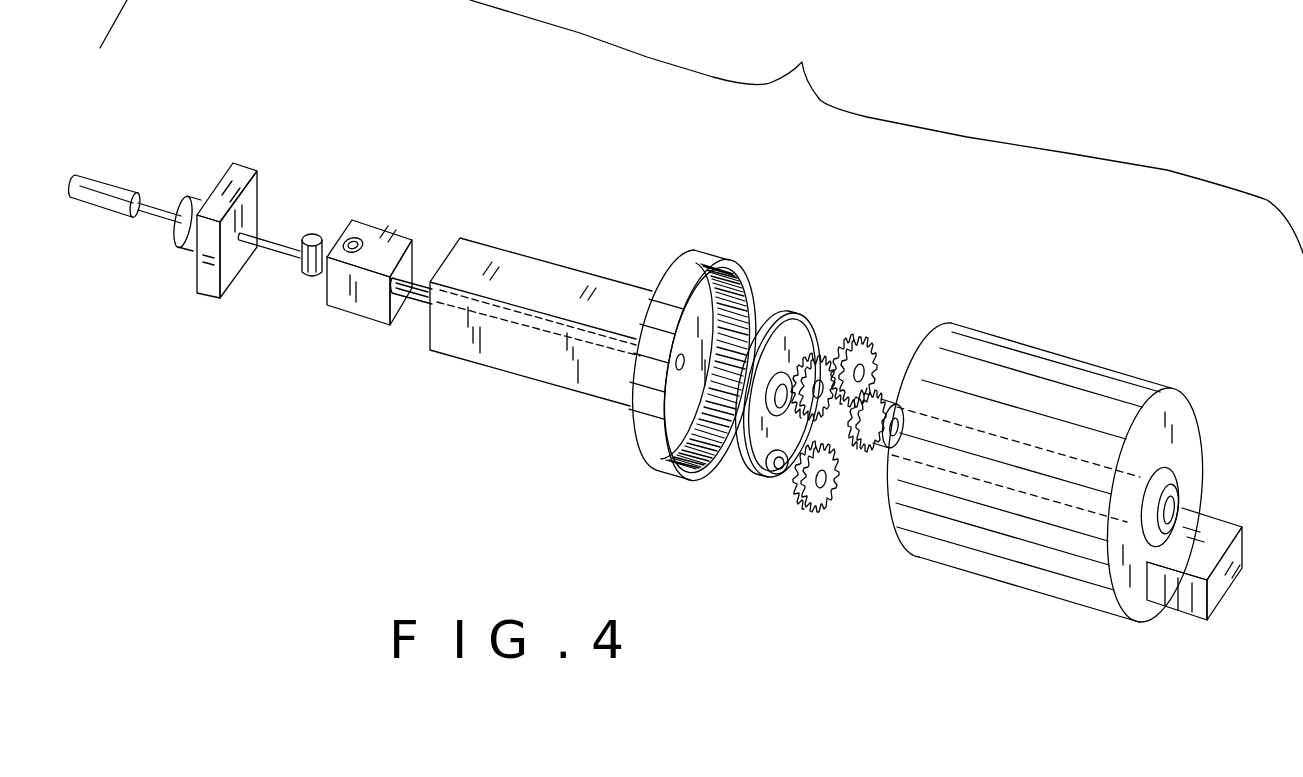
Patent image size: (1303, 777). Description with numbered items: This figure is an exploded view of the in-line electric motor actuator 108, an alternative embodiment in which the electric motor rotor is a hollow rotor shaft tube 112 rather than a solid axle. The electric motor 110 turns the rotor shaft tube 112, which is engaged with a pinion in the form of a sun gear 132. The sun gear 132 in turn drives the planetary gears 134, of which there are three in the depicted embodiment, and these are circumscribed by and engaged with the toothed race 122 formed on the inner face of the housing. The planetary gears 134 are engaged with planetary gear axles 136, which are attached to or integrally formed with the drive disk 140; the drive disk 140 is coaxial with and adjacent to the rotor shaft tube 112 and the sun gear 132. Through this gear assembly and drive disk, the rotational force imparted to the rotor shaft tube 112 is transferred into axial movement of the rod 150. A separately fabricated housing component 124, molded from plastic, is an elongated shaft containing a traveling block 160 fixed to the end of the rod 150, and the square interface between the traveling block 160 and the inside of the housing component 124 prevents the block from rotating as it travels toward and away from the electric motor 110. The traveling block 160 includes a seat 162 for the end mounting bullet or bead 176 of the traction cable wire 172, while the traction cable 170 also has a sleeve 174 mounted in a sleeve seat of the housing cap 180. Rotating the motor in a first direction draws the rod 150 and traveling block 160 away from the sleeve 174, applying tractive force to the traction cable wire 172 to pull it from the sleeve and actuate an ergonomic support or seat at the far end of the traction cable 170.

The in-line electric motor actuator 108 is at (701, 126).
The electric motor 110 is at (1064, 490).
The rotor shaft tube 112 is at (1018, 472).
The toothed race 122 is at (700, 475).
The housing component 124 is at (540, 299).
The sun gear 132 is at (893, 392).
The planetary gears 134 is at (867, 332).
The planetary gear axles 136 is at (790, 487).
The drive disk 140 is at (797, 310).
The rod 150 is at (533, 310).
The traveling block 160 is at (369, 253).
The seat 162 is at (347, 247).
The traction cable 170 is at (106, 180).
The traction cable wire 172 is at (273, 237).
The sleeve 174 is at (108, 212).
The end mounting bullet or bead 176 is at (315, 283).
The housing cap 180 is at (247, 165).